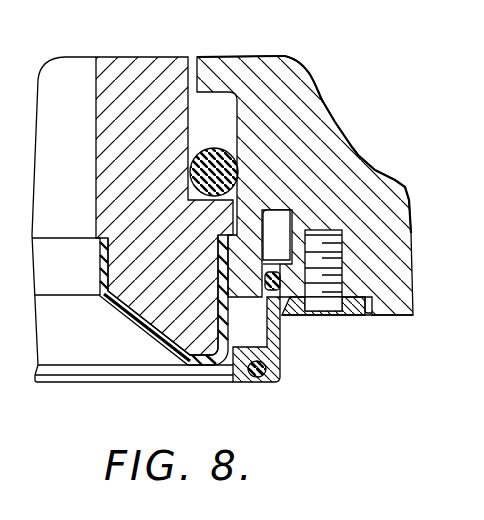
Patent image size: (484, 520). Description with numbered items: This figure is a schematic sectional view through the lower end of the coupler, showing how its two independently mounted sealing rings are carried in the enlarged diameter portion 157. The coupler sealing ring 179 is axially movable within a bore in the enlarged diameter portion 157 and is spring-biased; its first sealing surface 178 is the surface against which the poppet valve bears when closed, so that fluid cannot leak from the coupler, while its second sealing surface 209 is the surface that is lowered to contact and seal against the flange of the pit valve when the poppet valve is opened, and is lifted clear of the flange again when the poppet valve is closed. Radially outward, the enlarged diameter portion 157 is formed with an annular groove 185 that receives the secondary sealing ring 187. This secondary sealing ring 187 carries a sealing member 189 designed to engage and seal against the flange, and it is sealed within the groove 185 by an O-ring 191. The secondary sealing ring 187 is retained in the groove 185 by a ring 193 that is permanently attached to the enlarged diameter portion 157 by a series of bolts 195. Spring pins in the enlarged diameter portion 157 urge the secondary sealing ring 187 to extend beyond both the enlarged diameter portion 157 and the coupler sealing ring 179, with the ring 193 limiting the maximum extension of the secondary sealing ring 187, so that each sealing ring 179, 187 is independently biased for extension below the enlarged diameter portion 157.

The enlarged diameter portion 157 is at (305, 90).
The first sealing surface 178 is at (132, 327).
The coupler sealing ring 179 is at (147, 32).
The annular groove 185 is at (265, 210).
The secondary sealing ring 187 is at (281, 347).
The sealing member 189 is at (258, 380).
The O-ring 191 is at (264, 277).
The ring 193 is at (367, 315).
The bolts 195 is at (342, 233).
The second sealing surface 209 is at (193, 365).